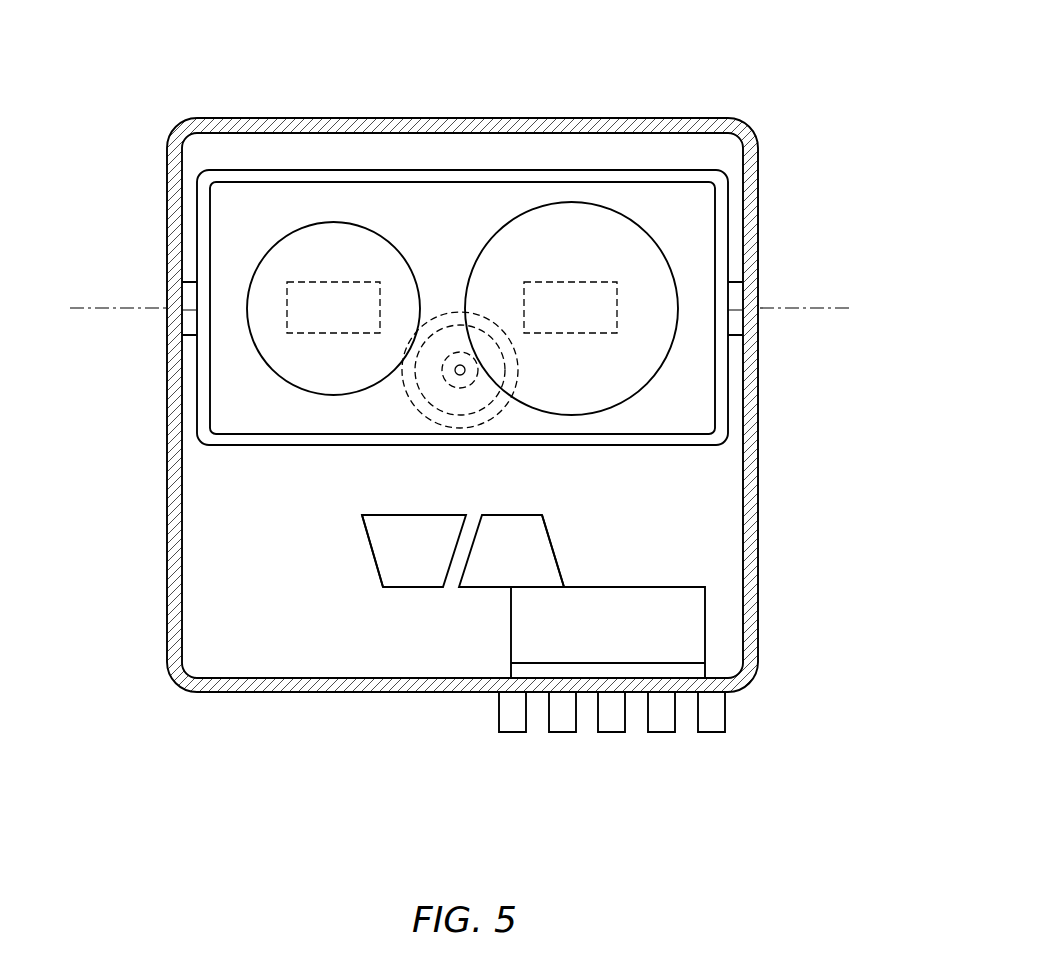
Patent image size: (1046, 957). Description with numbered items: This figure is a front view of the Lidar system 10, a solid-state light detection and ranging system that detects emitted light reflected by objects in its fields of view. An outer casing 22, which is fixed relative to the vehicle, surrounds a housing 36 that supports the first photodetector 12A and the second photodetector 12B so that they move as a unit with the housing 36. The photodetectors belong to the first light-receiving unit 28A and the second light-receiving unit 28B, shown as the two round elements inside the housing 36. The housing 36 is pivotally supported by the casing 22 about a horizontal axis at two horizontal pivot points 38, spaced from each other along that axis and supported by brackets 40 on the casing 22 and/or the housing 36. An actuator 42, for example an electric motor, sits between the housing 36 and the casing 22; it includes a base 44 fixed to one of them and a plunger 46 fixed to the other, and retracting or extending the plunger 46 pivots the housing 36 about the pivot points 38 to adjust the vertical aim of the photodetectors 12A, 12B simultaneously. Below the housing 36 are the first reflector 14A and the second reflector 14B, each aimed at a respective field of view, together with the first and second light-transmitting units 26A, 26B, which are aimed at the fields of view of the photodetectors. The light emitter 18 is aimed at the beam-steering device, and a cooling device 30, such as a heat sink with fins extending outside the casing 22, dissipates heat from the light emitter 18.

The system 10 is at (688, 60).
The first photodetector 12A is at (300, 334).
The second photodetector 12B is at (617, 334).
The first reflector 14A is at (366, 530).
The second reflector 14B is at (554, 556).
The light emitter 18 is at (705, 610).
The casing 22 is at (258, 692).
The first light-transmitting unit 26A is at (358, 572).
The second light-transmitting unit 26B is at (562, 522).
The first light-receiving unit 28A is at (262, 249).
The second light-receiving unit 28B is at (664, 246).
The cooling device 30 is at (544, 751).
The housing 36 is at (325, 180).
The horizontal pivot point 38 is at (188, 300).
The bracket 40 is at (189, 336).
The actuator 42 is at (404, 402).
The base 44 is at (452, 312).
The plunger 46 is at (461, 375).